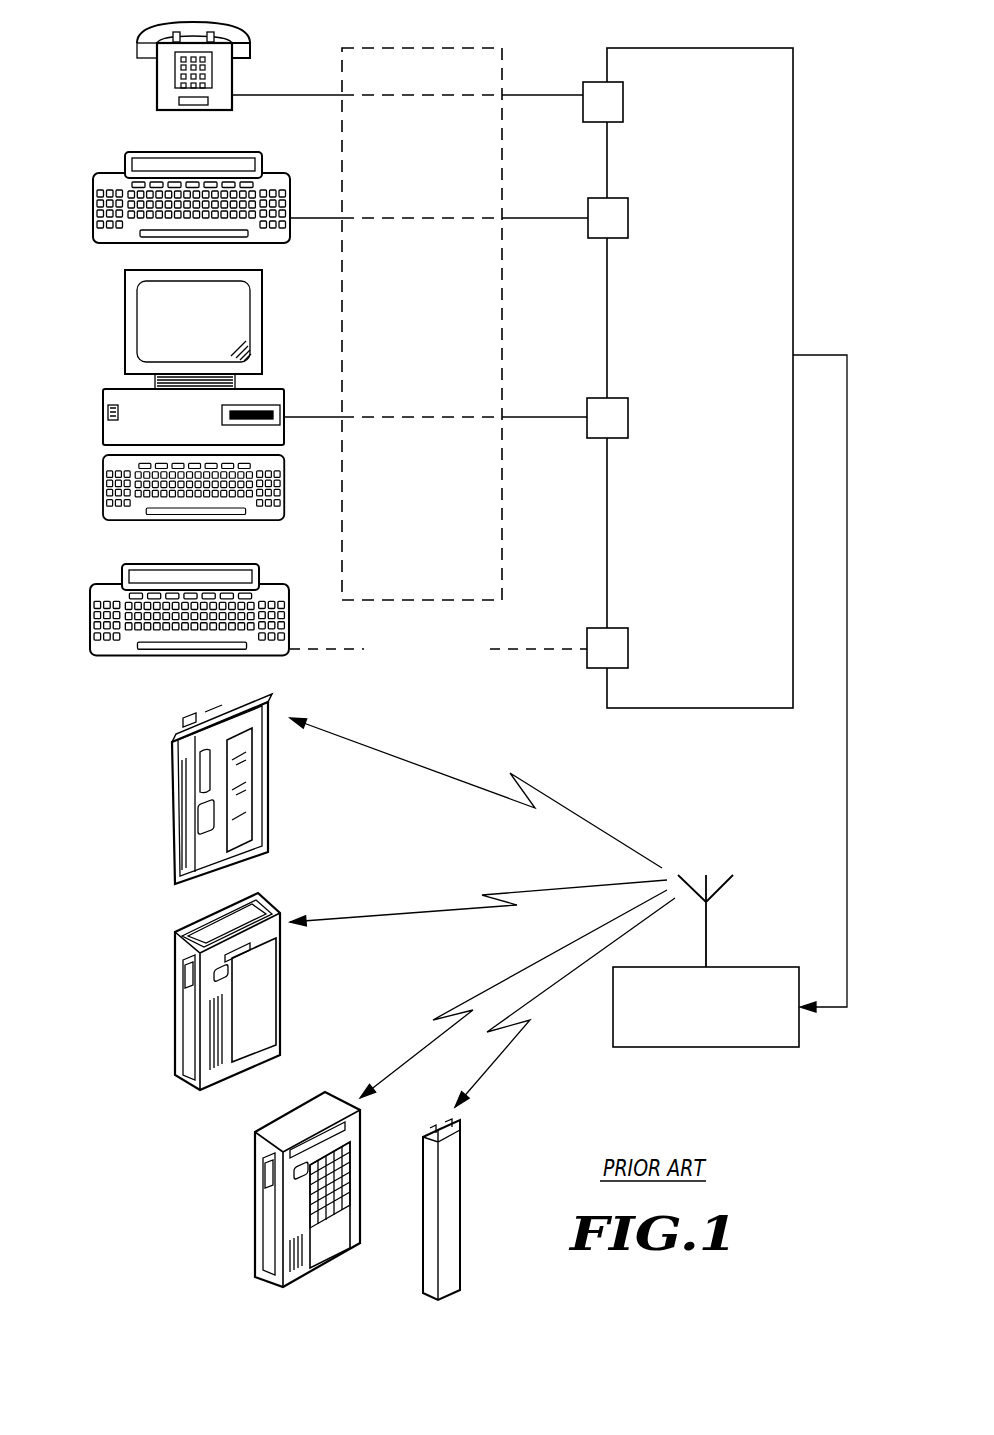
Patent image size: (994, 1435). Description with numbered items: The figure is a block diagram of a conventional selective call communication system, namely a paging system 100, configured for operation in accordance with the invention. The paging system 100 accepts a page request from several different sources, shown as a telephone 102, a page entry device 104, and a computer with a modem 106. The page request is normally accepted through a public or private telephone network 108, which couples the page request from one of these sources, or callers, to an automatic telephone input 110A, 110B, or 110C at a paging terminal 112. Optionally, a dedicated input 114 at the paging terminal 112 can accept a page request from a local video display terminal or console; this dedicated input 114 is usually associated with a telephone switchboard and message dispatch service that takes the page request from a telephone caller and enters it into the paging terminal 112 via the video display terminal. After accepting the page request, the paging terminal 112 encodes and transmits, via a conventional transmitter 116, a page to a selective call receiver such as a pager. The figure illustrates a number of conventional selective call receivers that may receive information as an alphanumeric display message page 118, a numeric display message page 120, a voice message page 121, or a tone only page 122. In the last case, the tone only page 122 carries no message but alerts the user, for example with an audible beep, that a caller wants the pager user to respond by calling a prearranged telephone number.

The paging system 100 is at (707, 26).
The telephone 102 is at (155, 83).
The page entry device 104 is at (93, 186).
The computer with a modem 106 is at (103, 398).
The public or private telephone network 108 is at (502, 48).
The automatic telephone input 110A is at (583, 113).
The automatic telephone input 110B is at (588, 228).
The automatic telephone input 110C is at (587, 430).
The paging terminal 112 is at (793, 48).
The dedicated input 114 is at (587, 660).
The transmitter 116 is at (743, 967).
The alphanumeric display message page 118 is at (268, 703).
The numeric display message page 120 is at (243, 893).
The voice message page 121 is at (325, 1093).
The tone only page 122 is at (460, 1128).